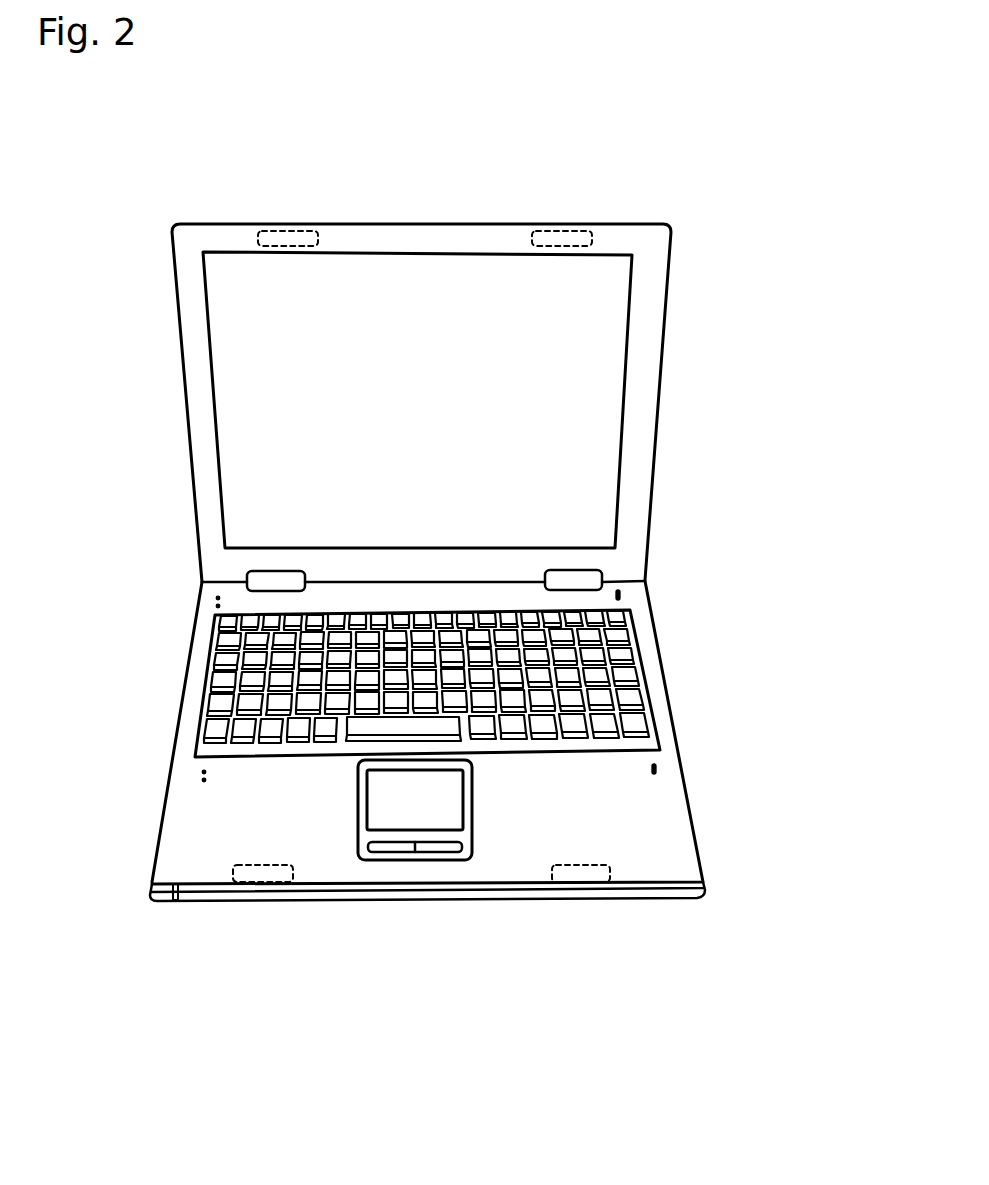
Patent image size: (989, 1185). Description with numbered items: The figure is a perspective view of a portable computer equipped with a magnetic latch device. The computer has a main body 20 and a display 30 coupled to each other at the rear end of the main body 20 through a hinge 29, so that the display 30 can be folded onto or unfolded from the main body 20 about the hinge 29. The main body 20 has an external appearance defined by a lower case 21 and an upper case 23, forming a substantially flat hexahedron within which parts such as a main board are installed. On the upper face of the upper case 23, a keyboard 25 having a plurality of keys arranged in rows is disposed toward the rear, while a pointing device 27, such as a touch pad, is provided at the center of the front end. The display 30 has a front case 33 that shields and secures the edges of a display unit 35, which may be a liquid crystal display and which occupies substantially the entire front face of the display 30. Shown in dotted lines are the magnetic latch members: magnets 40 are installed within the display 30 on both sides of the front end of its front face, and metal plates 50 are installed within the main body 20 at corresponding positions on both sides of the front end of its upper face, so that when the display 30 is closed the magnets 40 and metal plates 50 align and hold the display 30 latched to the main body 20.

The main body 20 is at (475, 796).
The lower case 21 is at (493, 898).
The upper case 23 is at (637, 882).
The keyboard 25 is at (623, 680).
The pointing device 27 is at (405, 872).
The hinge 29 is at (258, 579).
The display 30 is at (502, 351).
The front case 33 is at (652, 325).
The display unit 35 is at (598, 407).
The magnets 40 is at (292, 232).
The metal plates 50 is at (262, 884).